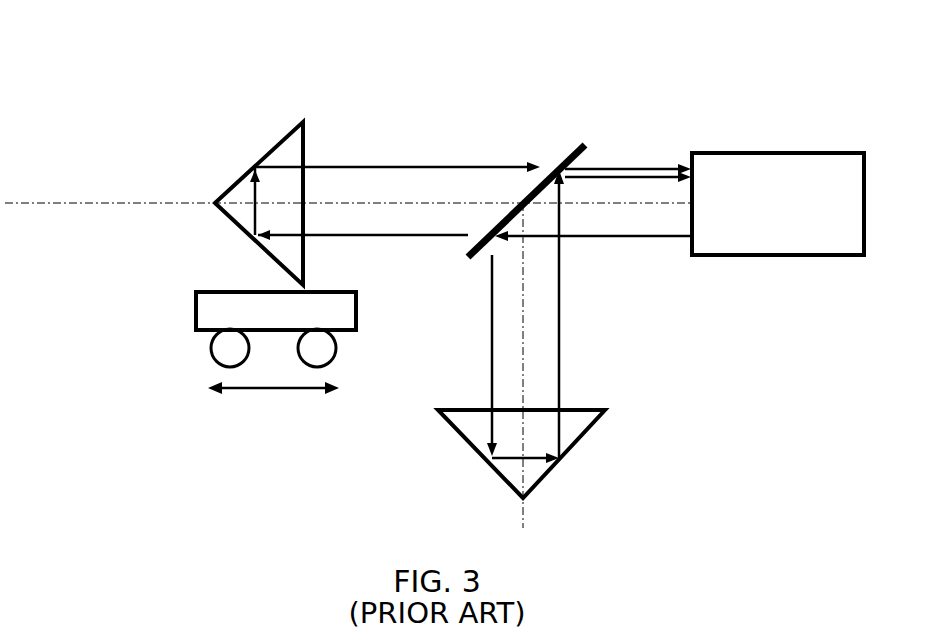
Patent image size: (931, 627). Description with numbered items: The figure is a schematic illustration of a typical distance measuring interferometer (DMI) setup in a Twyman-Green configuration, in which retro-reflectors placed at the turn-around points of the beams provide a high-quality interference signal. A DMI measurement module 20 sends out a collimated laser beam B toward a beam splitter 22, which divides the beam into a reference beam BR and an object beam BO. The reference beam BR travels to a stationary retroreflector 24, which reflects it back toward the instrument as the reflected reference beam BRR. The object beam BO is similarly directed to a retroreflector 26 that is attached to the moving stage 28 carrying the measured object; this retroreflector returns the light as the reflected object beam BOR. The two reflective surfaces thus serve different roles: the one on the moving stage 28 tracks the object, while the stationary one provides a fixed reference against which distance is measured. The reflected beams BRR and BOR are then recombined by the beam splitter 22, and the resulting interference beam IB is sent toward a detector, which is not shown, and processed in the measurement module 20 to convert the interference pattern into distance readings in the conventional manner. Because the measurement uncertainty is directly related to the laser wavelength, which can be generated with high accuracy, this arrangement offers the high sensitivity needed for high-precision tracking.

The DMI measurement module 20 is at (800, 152).
The beam splitter 22 is at (584, 142).
The stationary retroreflector 24 is at (437, 412).
The retroreflector 26 is at (281, 138).
The moving stage 28 is at (196, 300).
The collimated laser beam B is at (638, 238).
The object beam BO is at (440, 240).
The reflected object beam BOR is at (480, 160).
The reference beam BR is at (486, 338).
The reflected reference beam BRR is at (562, 343).
The interference beam IB is at (641, 167).